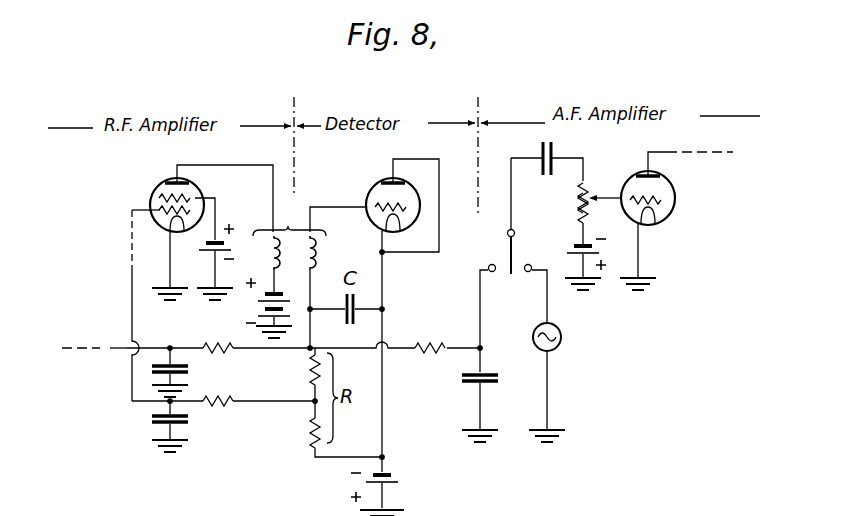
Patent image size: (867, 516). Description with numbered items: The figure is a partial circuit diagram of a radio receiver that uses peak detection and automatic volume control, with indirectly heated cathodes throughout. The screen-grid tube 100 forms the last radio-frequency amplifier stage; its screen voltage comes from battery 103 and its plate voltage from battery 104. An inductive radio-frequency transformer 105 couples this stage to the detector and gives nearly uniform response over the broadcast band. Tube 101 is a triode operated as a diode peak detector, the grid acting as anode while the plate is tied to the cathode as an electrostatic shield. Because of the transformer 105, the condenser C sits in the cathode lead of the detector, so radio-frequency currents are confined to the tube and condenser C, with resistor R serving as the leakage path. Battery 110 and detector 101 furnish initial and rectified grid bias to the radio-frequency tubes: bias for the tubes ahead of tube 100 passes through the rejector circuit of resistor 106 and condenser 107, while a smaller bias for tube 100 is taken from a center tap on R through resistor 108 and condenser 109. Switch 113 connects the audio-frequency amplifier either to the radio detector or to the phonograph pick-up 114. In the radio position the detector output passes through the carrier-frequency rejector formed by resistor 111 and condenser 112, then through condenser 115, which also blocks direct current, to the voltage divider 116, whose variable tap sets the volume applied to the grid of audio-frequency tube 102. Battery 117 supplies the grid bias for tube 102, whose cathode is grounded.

The screen-grid tube 100 is at (152, 192).
The triode used as diode peak detector 101 is at (382, 184).
The audio-frequency tube 102 is at (642, 177).
The battery 103 is at (205, 246).
The battery 104 is at (256, 309).
The inductive radio-frequency transformer 105 is at (289, 238).
The resistor 106 is at (228, 355).
The condenser 107 is at (191, 369).
The resistor 108 is at (222, 408).
The condenser 109 is at (192, 421).
The battery 110 is at (400, 478).
The resistor 111 is at (438, 352).
The condenser 112 is at (460, 379).
The switch 113 is at (506, 235).
The phonograph pick-up 114 is at (564, 333).
The condenser 115 is at (547, 169).
The voltage divider 116 is at (580, 207).
The battery 117 is at (577, 252).